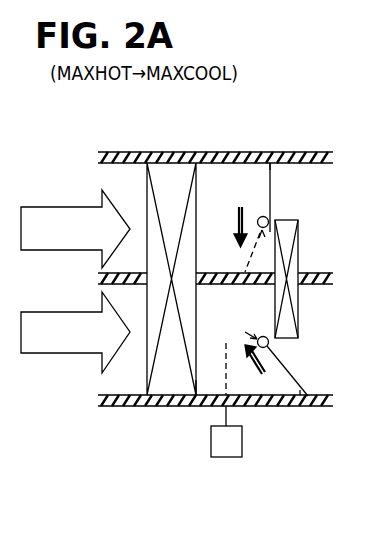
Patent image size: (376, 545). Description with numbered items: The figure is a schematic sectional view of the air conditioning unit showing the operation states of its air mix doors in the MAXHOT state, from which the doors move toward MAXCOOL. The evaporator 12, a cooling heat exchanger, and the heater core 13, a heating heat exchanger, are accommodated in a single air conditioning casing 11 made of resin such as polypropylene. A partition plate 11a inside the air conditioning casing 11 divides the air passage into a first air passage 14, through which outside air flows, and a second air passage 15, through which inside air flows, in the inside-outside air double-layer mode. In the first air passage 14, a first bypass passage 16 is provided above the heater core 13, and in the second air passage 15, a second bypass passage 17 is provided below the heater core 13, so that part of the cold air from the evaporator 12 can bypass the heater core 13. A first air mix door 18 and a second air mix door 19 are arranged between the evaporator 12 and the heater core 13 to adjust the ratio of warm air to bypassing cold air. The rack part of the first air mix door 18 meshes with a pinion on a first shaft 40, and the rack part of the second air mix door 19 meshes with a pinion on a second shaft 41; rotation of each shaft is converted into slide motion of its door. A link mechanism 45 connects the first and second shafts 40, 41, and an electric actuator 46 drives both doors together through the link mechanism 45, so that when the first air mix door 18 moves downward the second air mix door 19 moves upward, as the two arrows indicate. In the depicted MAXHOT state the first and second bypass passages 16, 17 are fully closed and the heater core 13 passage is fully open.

The air conditioning casing 11 is at (234, 152).
The partition plate 11a is at (200, 383).
The evaporator 12 is at (163, 378).
The heater core 13 is at (298, 268).
The first air passage 14 is at (137, 215).
The second air passage 15 is at (133, 348).
The first bypass passage 16 is at (293, 200).
The second bypass passage 17 is at (308, 365).
The first air mix door 18 is at (273, 187).
The second air mix door 19 is at (297, 383).
The first shaft 40 is at (259, 217).
The second shaft 41 is at (267, 347).
The link mechanism 45 is at (247, 387).
The electric actuator 46 is at (226, 458).